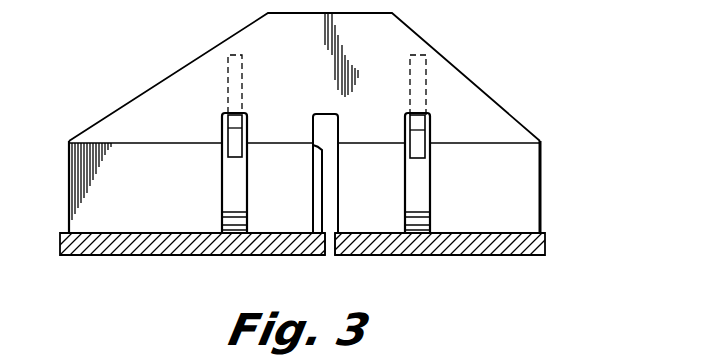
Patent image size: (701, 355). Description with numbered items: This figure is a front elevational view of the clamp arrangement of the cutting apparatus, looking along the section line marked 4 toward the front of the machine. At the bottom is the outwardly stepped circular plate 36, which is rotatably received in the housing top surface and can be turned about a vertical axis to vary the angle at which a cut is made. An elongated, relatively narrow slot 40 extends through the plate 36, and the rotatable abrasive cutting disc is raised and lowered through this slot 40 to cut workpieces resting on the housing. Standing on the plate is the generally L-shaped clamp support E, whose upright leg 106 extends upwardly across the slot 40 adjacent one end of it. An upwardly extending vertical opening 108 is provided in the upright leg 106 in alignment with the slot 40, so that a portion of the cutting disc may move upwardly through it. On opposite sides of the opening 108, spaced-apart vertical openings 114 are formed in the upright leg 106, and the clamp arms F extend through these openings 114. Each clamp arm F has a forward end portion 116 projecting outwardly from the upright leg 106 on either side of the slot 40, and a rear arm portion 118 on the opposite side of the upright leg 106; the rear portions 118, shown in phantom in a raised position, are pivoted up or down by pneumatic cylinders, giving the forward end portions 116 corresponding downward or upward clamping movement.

The section line 4- 4 is at (35, 0).
The circular plate 36 is at (517, 242).
The slot 40 is at (333, 236).
The upright leg 106 is at (532, 160).
The vertical opening 108 is at (322, 182).
The vertical openings 114 is at (230, 179).
The forward end portions 116 is at (231, 140).
The rear arm portions 118 is at (241, 76).
The clamp arms F is at (240, 119).
The clamp support E is at (541, 185).